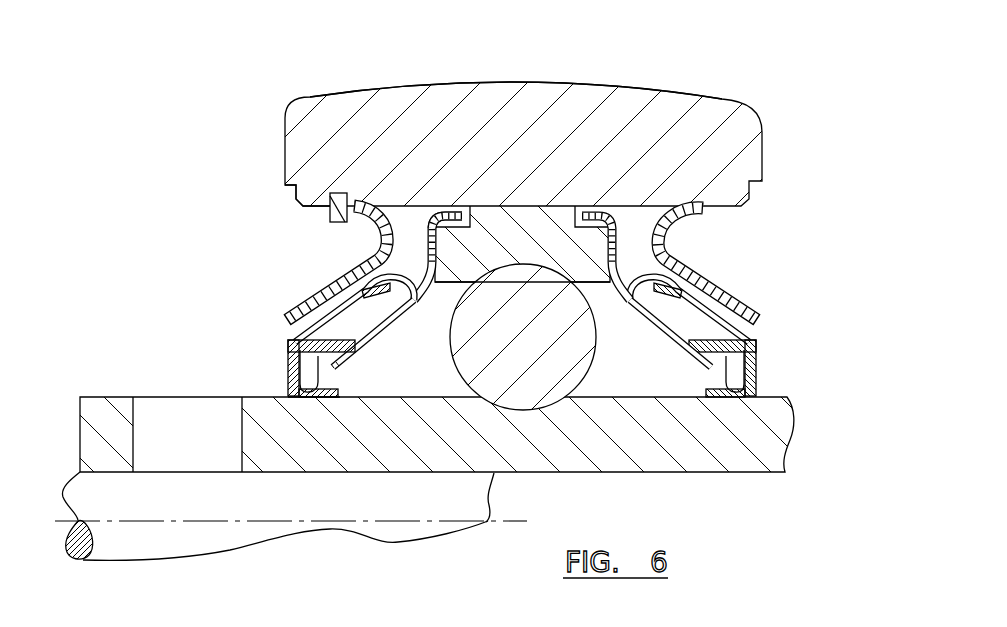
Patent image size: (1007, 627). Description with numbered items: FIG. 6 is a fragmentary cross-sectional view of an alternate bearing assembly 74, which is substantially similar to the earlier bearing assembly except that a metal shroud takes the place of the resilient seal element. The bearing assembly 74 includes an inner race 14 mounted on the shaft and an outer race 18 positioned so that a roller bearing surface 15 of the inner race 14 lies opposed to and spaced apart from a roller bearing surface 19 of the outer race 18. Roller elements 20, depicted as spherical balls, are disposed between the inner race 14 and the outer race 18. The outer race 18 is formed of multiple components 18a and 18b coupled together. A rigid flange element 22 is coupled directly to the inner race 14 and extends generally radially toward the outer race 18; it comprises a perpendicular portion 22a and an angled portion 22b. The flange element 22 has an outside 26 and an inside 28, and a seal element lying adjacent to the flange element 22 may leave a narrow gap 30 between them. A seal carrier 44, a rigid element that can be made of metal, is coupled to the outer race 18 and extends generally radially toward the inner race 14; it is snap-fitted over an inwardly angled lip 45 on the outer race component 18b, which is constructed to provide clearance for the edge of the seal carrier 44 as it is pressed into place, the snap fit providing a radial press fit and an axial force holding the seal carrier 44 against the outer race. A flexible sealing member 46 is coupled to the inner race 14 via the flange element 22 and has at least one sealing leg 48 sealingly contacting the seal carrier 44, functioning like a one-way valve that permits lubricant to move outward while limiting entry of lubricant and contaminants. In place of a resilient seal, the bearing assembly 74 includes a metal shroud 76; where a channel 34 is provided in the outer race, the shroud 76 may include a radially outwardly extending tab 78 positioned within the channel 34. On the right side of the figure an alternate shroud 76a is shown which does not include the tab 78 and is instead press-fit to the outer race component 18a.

The inner race 14 is at (453, 452).
The roller bearing surface 15 is at (520, 410).
The outer race 18 is at (695, 86).
The outer race component 18a is at (433, 120).
The outer race component 18b is at (527, 205).
The roller bearing surface 19 is at (506, 265).
The roller elements 20 is at (547, 365).
The flange element 22 is at (314, 408).
The perpendicular portion 22a is at (286, 378).
The angled portion 22b is at (290, 341).
The outside 26 is at (340, 307).
The inside 28 is at (748, 333).
The narrow gap 30 is at (416, 265).
The channel 34 is at (340, 197).
The seal carrier 44 is at (358, 358).
The inwardly angled lip 45 is at (437, 227).
The flexible sealing member 46 is at (308, 398).
The sealing leg 48 is at (325, 352).
The bearing assembly 74 is at (772, 68).
The metal shroud 76 is at (380, 243).
The shroud 76a is at (740, 298).
The radially outwardly extending tab 78 is at (348, 197).